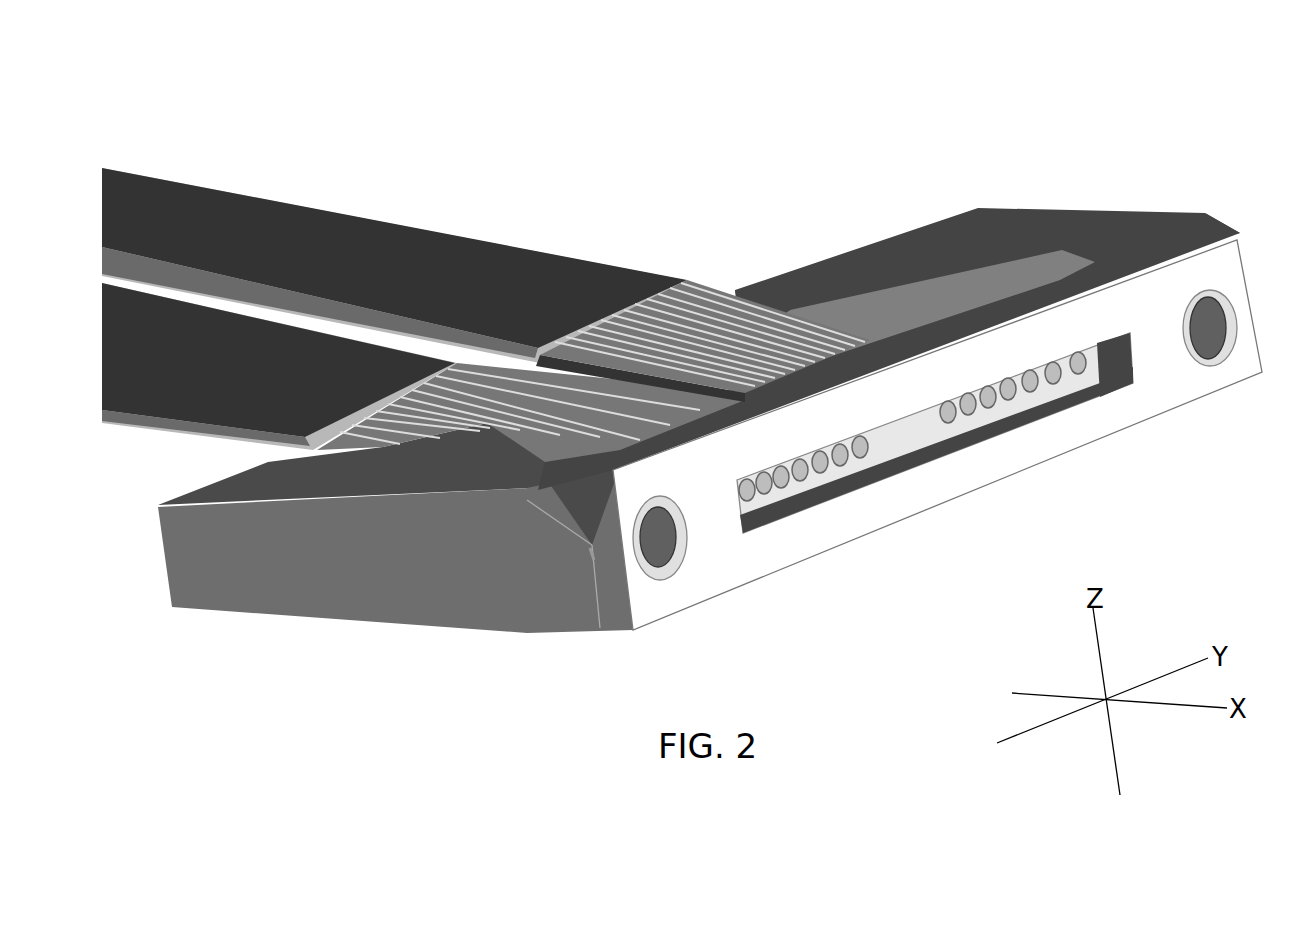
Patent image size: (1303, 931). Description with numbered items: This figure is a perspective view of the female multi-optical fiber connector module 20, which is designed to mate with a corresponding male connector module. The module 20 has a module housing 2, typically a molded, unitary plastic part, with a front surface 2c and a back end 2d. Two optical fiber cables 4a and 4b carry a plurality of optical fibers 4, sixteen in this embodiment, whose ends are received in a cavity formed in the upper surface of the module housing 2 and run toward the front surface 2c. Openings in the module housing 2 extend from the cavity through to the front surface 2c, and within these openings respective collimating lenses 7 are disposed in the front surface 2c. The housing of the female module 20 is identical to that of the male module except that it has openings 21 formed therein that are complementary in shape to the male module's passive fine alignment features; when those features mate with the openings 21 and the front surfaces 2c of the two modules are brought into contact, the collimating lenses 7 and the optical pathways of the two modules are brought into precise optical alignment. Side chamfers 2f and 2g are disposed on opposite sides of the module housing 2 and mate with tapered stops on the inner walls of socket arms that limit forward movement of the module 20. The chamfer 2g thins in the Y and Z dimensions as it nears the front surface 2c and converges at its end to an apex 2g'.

The female multi-optical fiber connector module 20 is at (1140, 102).
The module housing 2 is at (1137, 233).
The front surface 2c is at (940, 488).
The back end 2d is at (163, 547).
The side chamfer 2f is at (1203, 228).
The side chamfer 2g is at (580, 596).
The apex 2g' is at (624, 513).
The optical fibers 4 is at (670, 340).
The optical fiber cable 4a is at (435, 238).
The optical fiber cable 4b is at (207, 357).
The collimating lenses 7 is at (760, 487).
The openings 21 is at (668, 533).